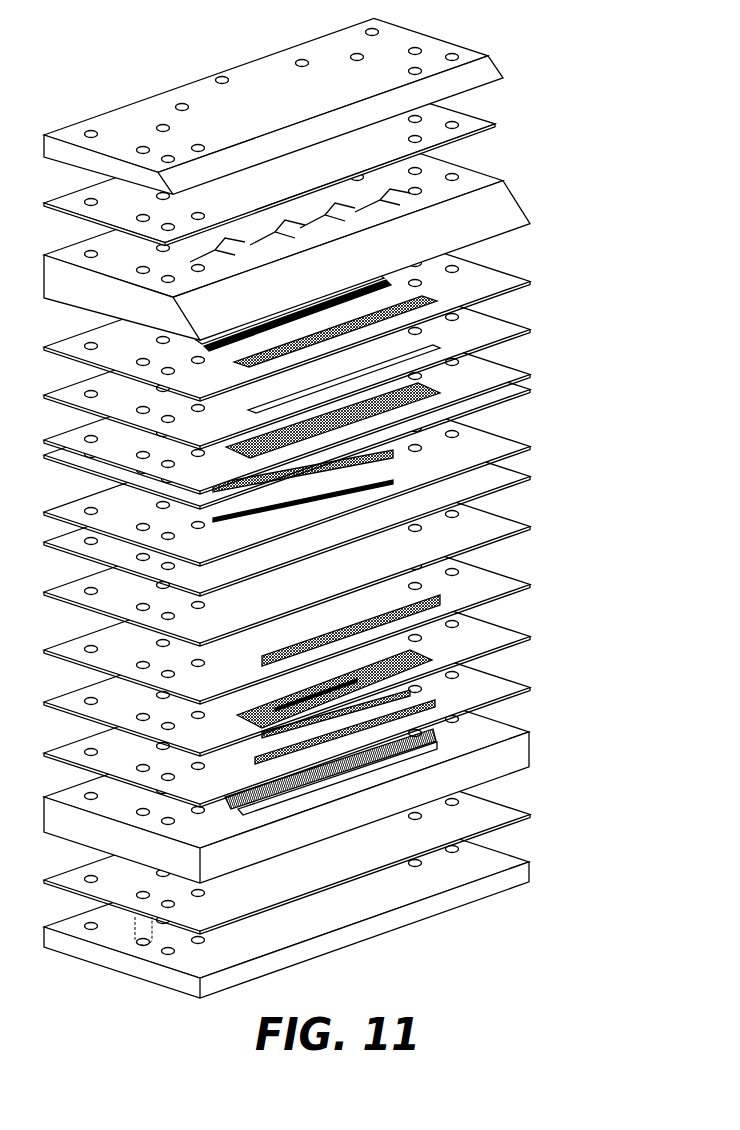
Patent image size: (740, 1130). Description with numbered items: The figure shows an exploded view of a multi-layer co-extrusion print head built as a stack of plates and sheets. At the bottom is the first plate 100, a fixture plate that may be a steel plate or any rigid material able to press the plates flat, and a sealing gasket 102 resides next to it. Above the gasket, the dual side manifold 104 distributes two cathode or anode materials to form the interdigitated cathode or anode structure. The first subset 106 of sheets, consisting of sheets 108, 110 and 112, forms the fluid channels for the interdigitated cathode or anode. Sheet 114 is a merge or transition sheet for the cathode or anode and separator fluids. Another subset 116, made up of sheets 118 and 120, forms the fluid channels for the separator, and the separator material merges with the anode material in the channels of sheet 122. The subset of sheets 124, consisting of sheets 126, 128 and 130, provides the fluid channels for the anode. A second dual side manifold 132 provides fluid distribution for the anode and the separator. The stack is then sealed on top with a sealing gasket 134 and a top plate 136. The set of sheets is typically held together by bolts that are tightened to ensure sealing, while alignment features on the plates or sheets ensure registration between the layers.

The first plate 100 is at (500, 860).
The sealing gasket 102 is at (500, 815).
The dual side manifold 104 is at (500, 730).
The first subset 106 is at (576, 585).
The sheet 108 is at (500, 688).
The sheet 110 is at (500, 637).
The sheet 112 is at (500, 585).
The merge or transition sheet 114 is at (488, 528).
The subset 116 is at (566, 436).
The sheet 118 is at (505, 479).
The sheet 120 is at (487, 441).
The sheet 122 is at (525, 387).
The subset of sheets 124 is at (579, 273).
The sheet 126 is at (492, 373).
The sheet 128 is at (500, 331).
The sheet 130 is at (500, 284).
The dual side manifold 132 is at (506, 206).
The sealing gasket 134 is at (482, 130).
The top plate 136 is at (486, 58).